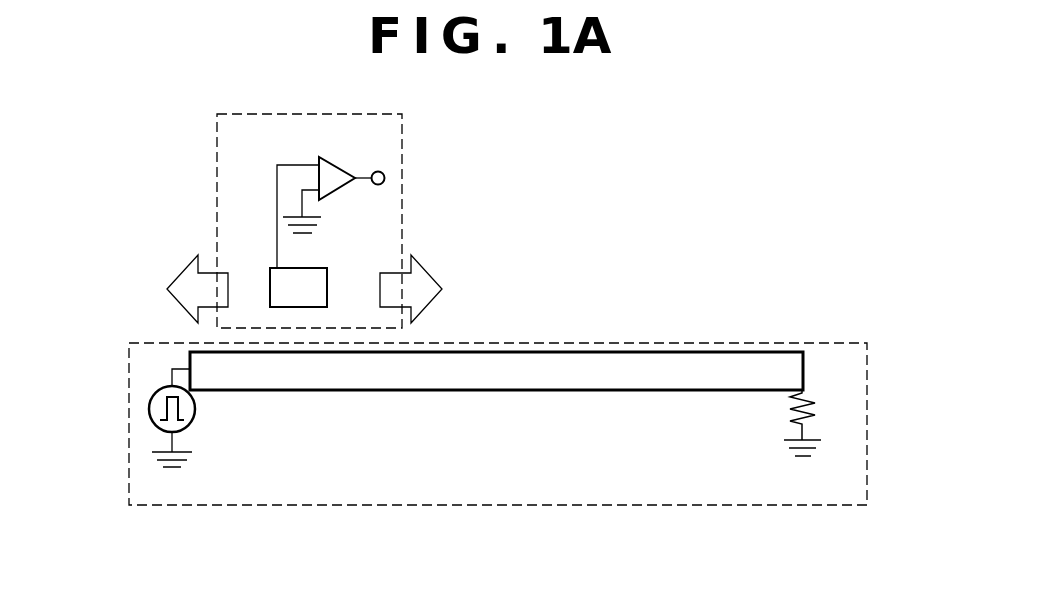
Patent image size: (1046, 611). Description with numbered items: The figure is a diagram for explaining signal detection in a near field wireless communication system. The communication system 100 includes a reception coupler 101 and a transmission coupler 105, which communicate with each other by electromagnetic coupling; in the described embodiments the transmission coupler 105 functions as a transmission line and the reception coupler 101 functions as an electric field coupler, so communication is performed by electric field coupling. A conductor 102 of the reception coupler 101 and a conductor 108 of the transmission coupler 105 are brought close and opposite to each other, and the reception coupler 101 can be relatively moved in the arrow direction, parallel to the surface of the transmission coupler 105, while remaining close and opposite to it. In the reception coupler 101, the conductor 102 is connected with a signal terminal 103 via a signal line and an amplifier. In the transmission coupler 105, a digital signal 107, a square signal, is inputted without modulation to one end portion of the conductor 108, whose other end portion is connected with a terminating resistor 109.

The communication system 100 is at (872, 260).
The reception coupler 101 is at (145, 190).
The conductor 102 is at (327, 268).
The signal terminal 103 is at (385, 178).
The transmission coupler 105 is at (728, 507).
The digital signal 107 is at (149, 412).
The conductor 108 is at (522, 390).
The terminating resistor 109 is at (816, 400).